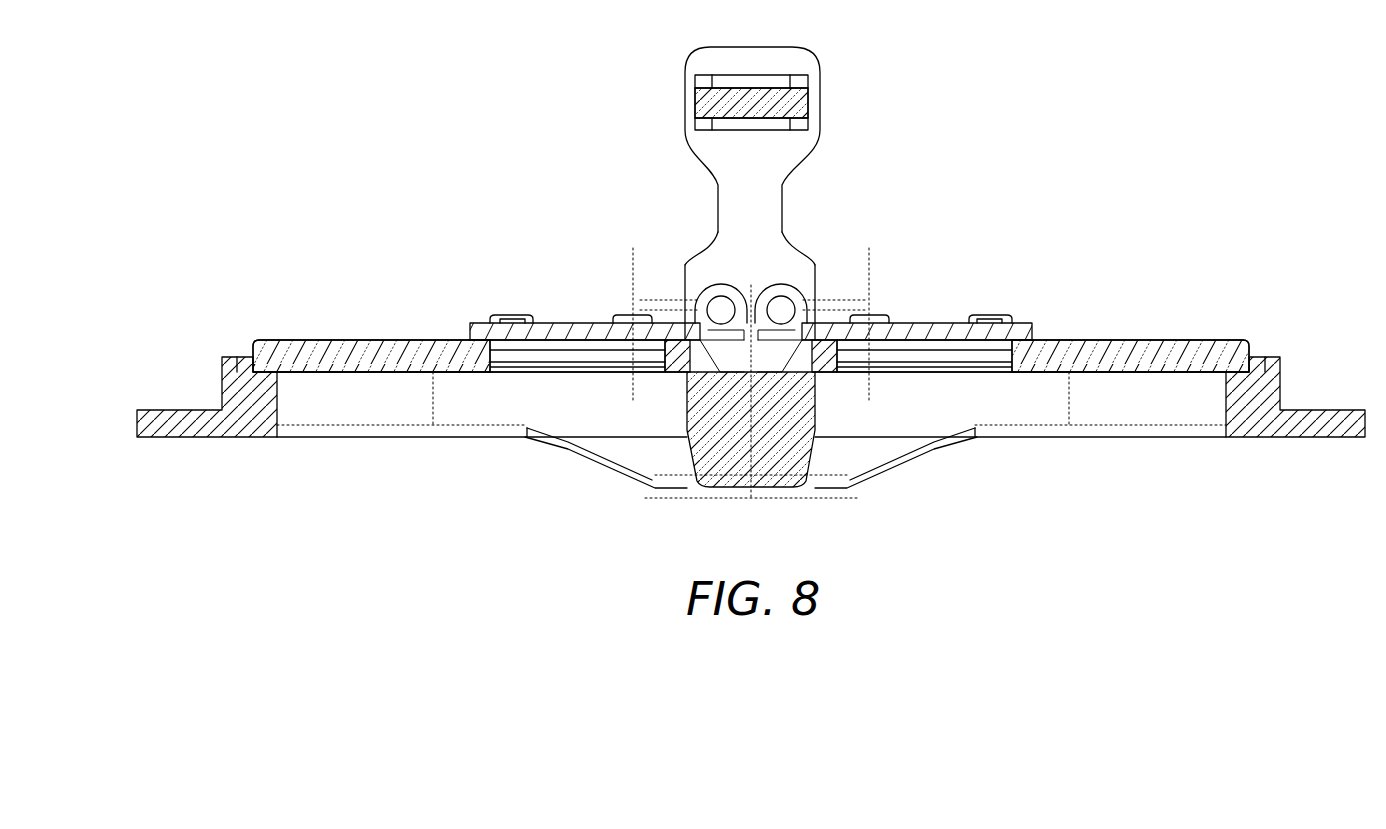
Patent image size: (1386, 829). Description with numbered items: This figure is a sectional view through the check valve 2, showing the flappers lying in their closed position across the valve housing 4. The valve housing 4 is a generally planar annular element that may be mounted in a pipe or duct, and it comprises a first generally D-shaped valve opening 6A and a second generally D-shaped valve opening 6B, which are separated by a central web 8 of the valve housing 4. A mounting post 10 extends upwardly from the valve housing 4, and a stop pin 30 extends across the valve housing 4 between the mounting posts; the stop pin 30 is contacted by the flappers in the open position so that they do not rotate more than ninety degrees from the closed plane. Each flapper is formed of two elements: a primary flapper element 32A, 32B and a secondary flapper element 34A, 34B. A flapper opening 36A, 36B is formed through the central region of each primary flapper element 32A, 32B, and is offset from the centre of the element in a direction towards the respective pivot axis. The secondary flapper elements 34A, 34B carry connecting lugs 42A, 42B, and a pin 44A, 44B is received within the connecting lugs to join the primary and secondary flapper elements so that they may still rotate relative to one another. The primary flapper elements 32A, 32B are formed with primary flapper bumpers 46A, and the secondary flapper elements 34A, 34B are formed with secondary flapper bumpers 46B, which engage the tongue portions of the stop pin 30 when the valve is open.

The check valve 2 is at (1106, 118).
The valve housing 4 is at (1330, 432).
The first valve opening 6A is at (1152, 410).
The second valve opening 6B is at (353, 410).
The central web 8 is at (782, 470).
The mounting post 10 is at (797, 48).
The stop pin 30 is at (745, 95).
The primary flapper element 32A is at (1196, 350).
The primary flapper element 32B is at (306, 350).
The secondary flapper element 34A is at (1022, 330).
The secondary flapper element 34B is at (482, 330).
The flapper opening 36A is at (968, 372).
The flapper opening 36B is at (535, 372).
The connecting lug 42A is at (788, 296).
The connecting lug 42B is at (714, 296).
The pin 44A is at (800, 323).
The pin 44B is at (702, 323).
The primary flapper bumper 46A is at (530, 315).
The secondary flapper bumper 46B is at (510, 315).